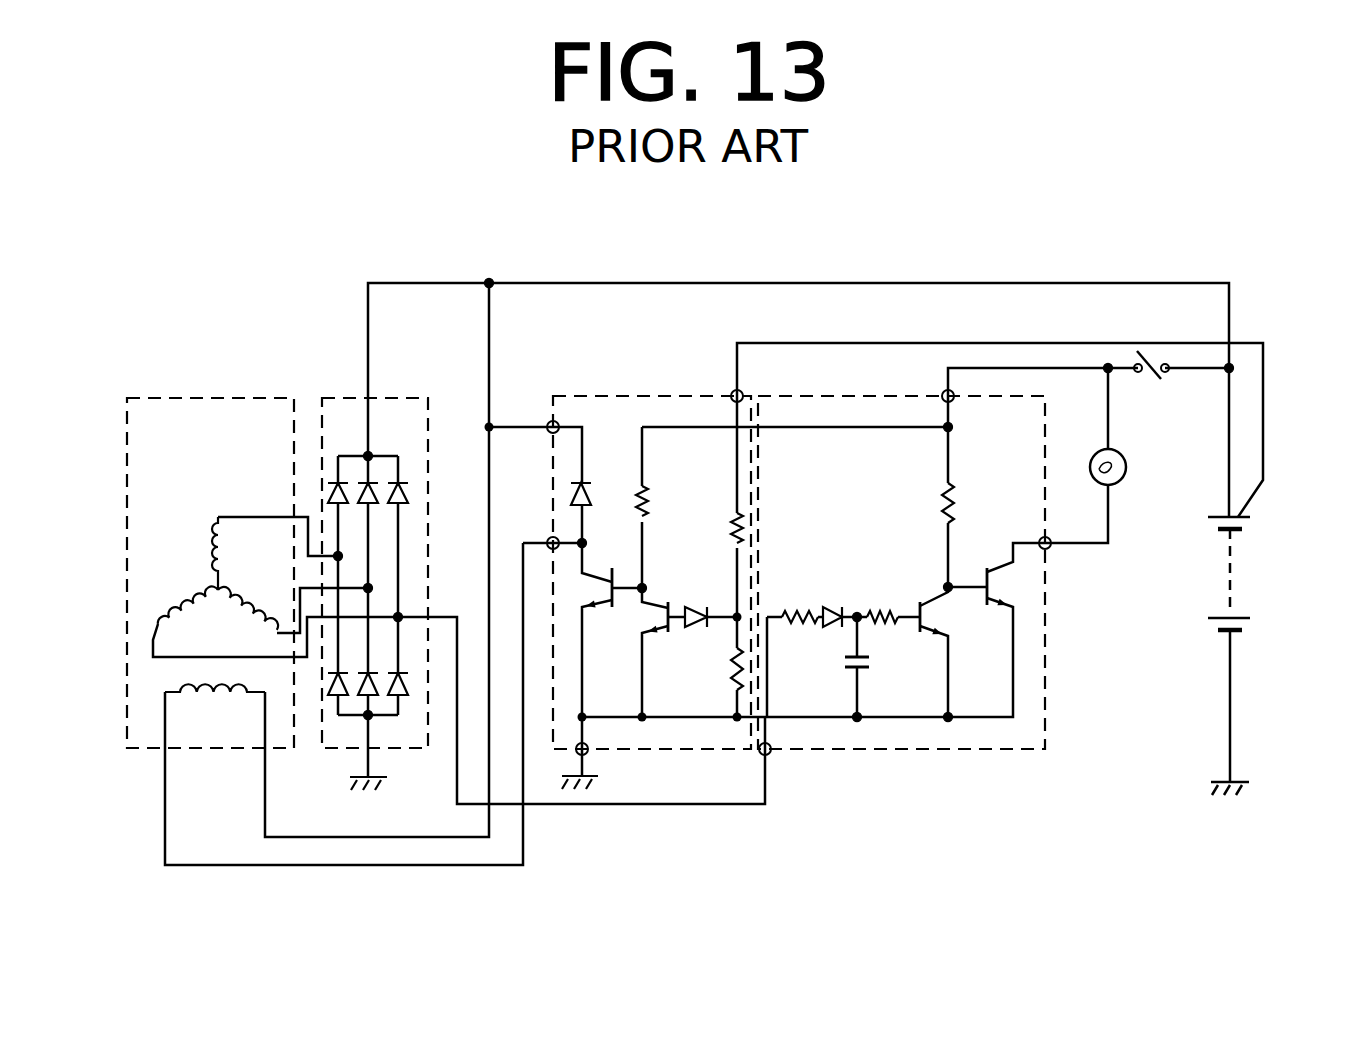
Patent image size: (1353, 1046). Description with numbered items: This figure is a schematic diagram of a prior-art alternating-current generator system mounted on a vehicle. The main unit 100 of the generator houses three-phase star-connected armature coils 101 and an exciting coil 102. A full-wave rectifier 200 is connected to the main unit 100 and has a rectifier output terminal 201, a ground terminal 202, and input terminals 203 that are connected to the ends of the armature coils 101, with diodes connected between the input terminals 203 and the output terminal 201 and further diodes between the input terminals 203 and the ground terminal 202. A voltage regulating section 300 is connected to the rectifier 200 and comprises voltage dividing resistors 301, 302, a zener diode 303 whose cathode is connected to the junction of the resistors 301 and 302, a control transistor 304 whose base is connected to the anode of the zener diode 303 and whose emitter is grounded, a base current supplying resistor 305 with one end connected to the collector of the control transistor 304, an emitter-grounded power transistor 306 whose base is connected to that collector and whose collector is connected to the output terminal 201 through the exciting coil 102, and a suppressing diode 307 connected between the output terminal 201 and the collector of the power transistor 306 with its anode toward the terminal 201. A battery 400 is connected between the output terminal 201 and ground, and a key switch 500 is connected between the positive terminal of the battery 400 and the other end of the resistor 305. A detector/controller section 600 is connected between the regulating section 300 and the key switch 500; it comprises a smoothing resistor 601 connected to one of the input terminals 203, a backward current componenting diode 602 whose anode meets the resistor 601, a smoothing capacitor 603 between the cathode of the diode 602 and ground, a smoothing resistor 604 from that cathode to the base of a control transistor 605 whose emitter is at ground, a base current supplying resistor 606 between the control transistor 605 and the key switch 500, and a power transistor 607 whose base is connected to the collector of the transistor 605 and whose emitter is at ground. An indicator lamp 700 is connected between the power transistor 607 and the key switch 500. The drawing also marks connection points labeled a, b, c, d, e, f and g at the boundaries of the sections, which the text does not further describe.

The main unit of the alternating-current generator 100 is at (258, 351).
The armature coils 101 is at (217, 526).
The exciting coil 102 is at (228, 700).
The full-wave rectifier 200 is at (438, 351).
The rectifier output terminal 201 is at (368, 452).
The ground terminal 202 is at (372, 718).
The input terminals 203 is at (398, 617).
The voltage regulating section 300 is at (699, 752).
The voltage dividing resistor 301 is at (735, 512).
The voltage dividing resistor 302 is at (724, 670).
The zener diode 303 is at (708, 608).
The control transistor 304 is at (655, 627).
The base current supplying resistor 305 is at (646, 486).
The power transistor 306 is at (587, 567).
The suppressing diode 307 is at (586, 483).
The battery 400 is at (1232, 563).
The key switch 500 is at (1169, 386).
The detector/controller section 600 is at (950, 752).
The smoothing resistor 601 is at (797, 612).
The backward current componenting diode 602 is at (838, 610).
The smoothing capacitor 603 is at (840, 662).
The smoothing resistor 604 is at (893, 612).
The control transistor 605 is at (920, 662).
The base current supplying resistor 606 is at (953, 488).
The power transistor 607 is at (1015, 588).
The indicator lamp 700 is at (1127, 467).
The terminal a is at (549, 540).
The terminal b is at (587, 752).
The terminal c is at (770, 752).
The terminal d is at (1050, 548).
The terminal e is at (946, 392).
The terminal f is at (735, 394).
The terminal g is at (548, 424).